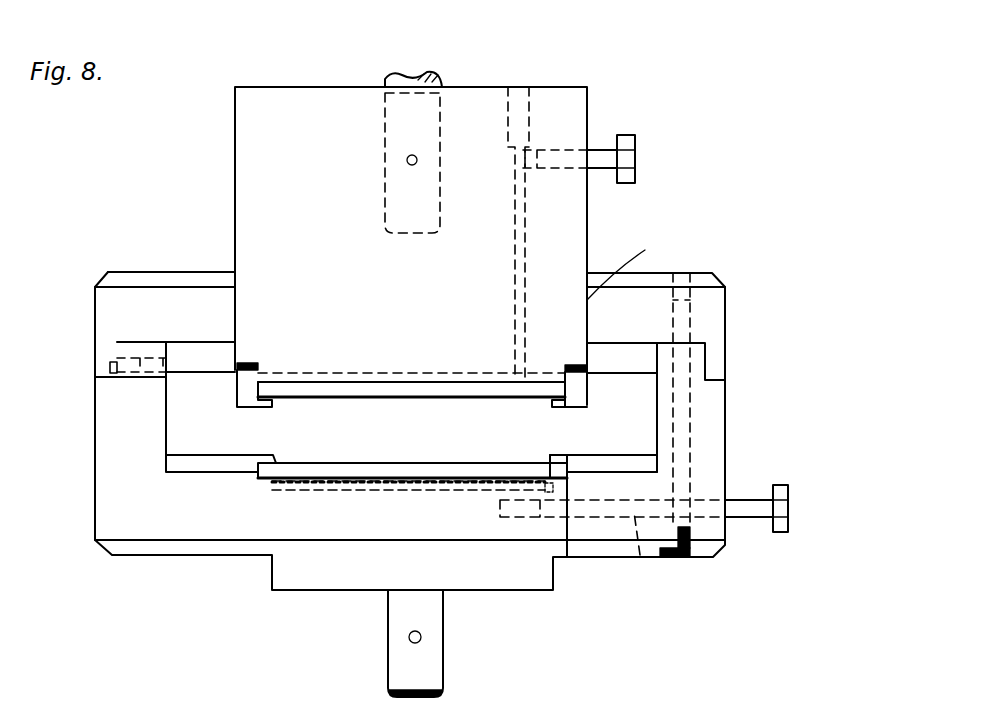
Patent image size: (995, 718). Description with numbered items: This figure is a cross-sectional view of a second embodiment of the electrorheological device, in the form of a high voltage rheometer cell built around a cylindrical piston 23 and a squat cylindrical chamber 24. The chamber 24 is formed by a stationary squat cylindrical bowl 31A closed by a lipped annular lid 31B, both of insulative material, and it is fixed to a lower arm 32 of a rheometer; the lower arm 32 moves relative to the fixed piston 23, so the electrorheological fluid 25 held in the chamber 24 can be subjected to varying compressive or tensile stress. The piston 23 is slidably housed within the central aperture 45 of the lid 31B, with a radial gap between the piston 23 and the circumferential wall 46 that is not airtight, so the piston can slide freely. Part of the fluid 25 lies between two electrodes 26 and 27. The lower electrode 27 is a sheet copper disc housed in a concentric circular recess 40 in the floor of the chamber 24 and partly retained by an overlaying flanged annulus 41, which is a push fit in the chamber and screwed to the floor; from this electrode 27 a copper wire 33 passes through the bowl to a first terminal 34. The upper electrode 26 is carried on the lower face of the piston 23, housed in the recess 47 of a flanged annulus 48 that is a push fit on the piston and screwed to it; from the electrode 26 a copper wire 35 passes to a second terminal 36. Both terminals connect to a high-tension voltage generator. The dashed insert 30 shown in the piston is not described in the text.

The cylindrical piston 23 is at (235, 153).
The squat cylindrical chamber 24 is at (832, 318).
The electrorheological fluid 25 is at (180, 422).
The electrode 26 is at (313, 388).
The electrode 27 is at (268, 470).
The insert 30 is at (398, 193).
The squat cylindrical bowl 31A is at (718, 350).
The lipped annular lid 31B is at (712, 405).
The lower arm 32 is at (398, 600).
The copper wire 33 is at (642, 558).
The first terminal 34 is at (788, 510).
The copper wire 35 is at (525, 257).
The second terminal 36 is at (598, 155).
The circular recess 40 is at (568, 558).
The flanged annulus 41 is at (650, 462).
The central aperture 45 is at (232, 272).
The circumferential wall 46 is at (638, 380).
The recess 47 is at (570, 410).
The flanged annulus 48 is at (583, 392).